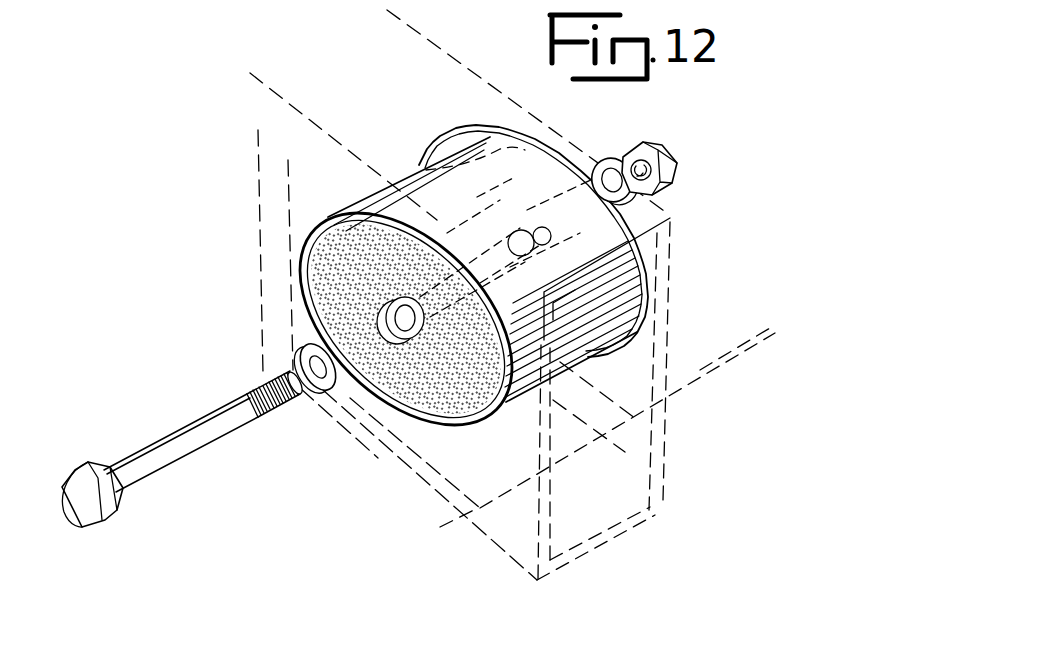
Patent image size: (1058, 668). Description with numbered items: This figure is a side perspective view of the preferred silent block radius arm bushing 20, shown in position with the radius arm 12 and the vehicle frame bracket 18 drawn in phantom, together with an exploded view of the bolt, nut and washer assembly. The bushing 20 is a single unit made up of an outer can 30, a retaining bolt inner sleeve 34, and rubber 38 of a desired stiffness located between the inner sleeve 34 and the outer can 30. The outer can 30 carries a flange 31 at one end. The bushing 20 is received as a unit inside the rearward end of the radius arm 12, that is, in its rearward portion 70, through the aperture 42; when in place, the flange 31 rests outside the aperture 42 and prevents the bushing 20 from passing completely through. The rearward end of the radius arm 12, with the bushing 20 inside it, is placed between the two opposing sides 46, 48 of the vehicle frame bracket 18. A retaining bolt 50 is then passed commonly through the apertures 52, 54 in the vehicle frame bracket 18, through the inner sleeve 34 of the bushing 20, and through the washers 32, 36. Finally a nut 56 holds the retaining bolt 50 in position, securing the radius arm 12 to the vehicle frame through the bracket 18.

The radius arm 12 is at (227, 364).
The vehicle frame bracket 18 is at (746, 378).
The bushing 20 is at (391, 157).
The outer can 30 is at (512, 405).
The flange 31 is at (657, 312).
The washer 32 is at (303, 340).
The retaining bolt inner sleeve 34 is at (489, 237).
The washer 36 is at (608, 163).
The rubber 38 is at (440, 402).
The aperture 42 is at (423, 168).
The side of vehicle frame bracket 46 is at (376, 452).
The side of vehicle frame bracket 48 is at (686, 388).
The retaining bolt 50 is at (186, 460).
The aperture 52 is at (406, 319).
The aperture 54 is at (537, 227).
The nut 56 is at (630, 147).
The rearward portion 70 is at (638, 520).